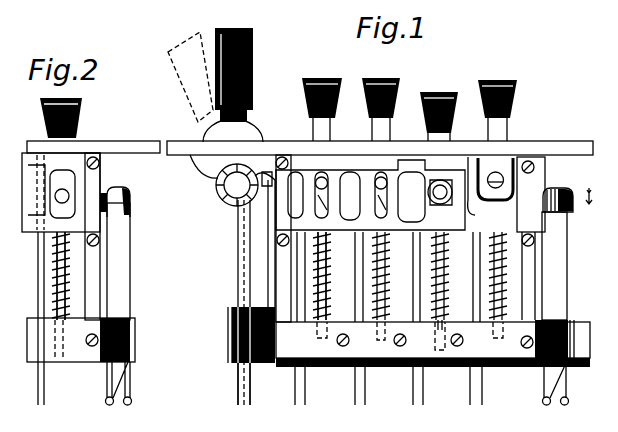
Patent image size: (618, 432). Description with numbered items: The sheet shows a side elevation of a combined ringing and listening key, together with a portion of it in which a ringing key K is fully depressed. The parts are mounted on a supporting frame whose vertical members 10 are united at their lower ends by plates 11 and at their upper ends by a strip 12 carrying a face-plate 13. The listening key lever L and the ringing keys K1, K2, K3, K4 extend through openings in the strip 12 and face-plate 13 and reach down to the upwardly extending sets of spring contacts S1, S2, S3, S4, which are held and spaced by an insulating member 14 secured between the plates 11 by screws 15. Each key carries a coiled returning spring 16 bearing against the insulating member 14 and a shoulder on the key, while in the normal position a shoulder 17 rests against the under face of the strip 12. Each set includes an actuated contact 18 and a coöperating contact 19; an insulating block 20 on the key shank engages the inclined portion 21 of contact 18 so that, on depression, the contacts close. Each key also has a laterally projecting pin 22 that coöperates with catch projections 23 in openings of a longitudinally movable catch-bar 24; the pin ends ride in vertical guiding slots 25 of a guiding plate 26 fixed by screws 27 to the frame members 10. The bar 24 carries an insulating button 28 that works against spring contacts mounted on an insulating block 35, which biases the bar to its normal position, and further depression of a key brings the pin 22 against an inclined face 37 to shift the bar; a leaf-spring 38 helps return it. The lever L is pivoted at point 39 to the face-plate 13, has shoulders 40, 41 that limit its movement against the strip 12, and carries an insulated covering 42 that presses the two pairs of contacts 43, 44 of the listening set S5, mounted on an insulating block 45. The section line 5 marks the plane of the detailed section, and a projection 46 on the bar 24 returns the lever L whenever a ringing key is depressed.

In FIG. 2, the ringing key K is at (61, 118).
In FIG. 1, the ringing key K1 is at (321, 78).
In FIG. 1, the ringing key K2 is at (381, 78).
In FIG. 1, the ringing key K3 is at (442, 92).
In FIG. 1, the ringing key K4 is at (503, 80).
In FIG. 1, the listening key lever L is at (250, 33).
In FIG. 1, the section line 5 is at (574, 205).
In FIG. 2, the vertical frame member 10 is at (97, 268).
In FIG. 1, the vertical frame member 10 is at (276, 290).
In FIG. 1, the plate 11 is at (408, 352).
In FIG. 1, the strip 12 is at (540, 154).
In FIG. 1, the face-plate 13 is at (512, 150).
In FIG. 1, the insulating member 14 is at (512, 366).
In FIG. 1, the screw 15 is at (392, 346).
In FIG. 1, the coiled returning spring 16 is at (356, 300).
In FIG. 2, the shoulder 17 is at (88, 142).
In FIG. 2, the actuated contact 18 is at (50, 262).
In FIG. 1, the actuated contact 18 is at (357, 250).
In FIG. 2, the coöperating contact 19 is at (40, 248).
In FIG. 1, the coöperating contact 19 is at (357, 270).
In FIG. 1, the insulating block 20 is at (472, 158).
In FIG. 1, the inclined portion 21 is at (480, 158).
In FIG. 1, the pin 22 is at (499, 172).
In FIG. 1, the catch projection 23 is at (428, 165).
In FIG. 1, the catch-bar 24 is at (411, 197).
In FIG. 1, the guiding slot 25 is at (324, 190).
In FIG. 1, the guiding plate 26 is at (383, 228).
In FIG. 1, the screw 27 is at (280, 243).
In FIG. 1, the insulating button 28 is at (571, 196).
In FIG. 1, the insulating block 35 is at (562, 330).
In FIG. 1, the inclined face 37 is at (438, 206).
In FIG. 1, the leaf-spring 38 is at (268, 274).
In FIG. 1, the pivot point 39 is at (244, 140).
In FIG. 1, the shoulder 40 is at (196, 163).
In FIG. 1, the shoulder 41 is at (283, 156).
In FIG. 1, the insulated covering 42 is at (230, 205).
In FIG. 1, the contact 43 is at (239, 250).
In FIG. 1, the contact 44 is at (243, 232).
In FIG. 1, the insulating block 45 is at (256, 364).
In FIG. 1, the projection 46 is at (272, 182).
In FIG. 1, the set of spring contacts S1 is at (302, 390).
In FIG. 1, the set of spring contacts S2 is at (363, 396).
In FIG. 1, the set of spring contacts S3 is at (421, 396).
In FIG. 1, the set of spring contacts S4 is at (479, 396).
In FIG. 1, the set of listening key contacts S5 is at (236, 380).